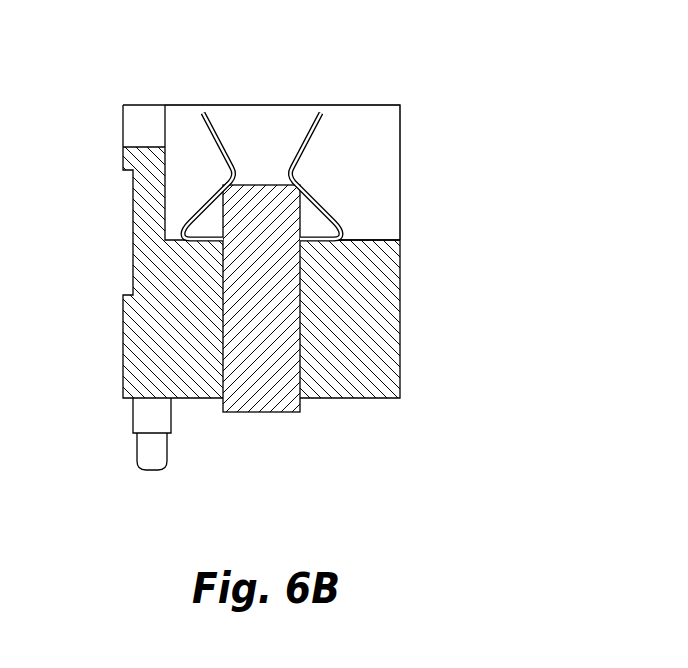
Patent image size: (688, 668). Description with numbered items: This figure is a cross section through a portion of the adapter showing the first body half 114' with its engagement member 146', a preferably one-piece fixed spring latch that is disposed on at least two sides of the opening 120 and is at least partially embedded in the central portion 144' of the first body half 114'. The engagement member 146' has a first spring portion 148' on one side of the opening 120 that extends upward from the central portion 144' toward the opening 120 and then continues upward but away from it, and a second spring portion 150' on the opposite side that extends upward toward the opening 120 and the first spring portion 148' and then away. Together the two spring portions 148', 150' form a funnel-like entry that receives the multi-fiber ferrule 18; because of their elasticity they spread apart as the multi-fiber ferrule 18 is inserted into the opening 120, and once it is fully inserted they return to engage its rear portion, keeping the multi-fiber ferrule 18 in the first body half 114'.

The first body half 114' is at (355, 268).
The opening 120 is at (300, 323).
The engagement member 146' is at (305, 124).
The central portion 144' is at (406, 227).
The multi-fiber ferrule 18 is at (248, 185).
The second spring portion 150' is at (208, 136).
The first spring portion 148' is at (316, 136).